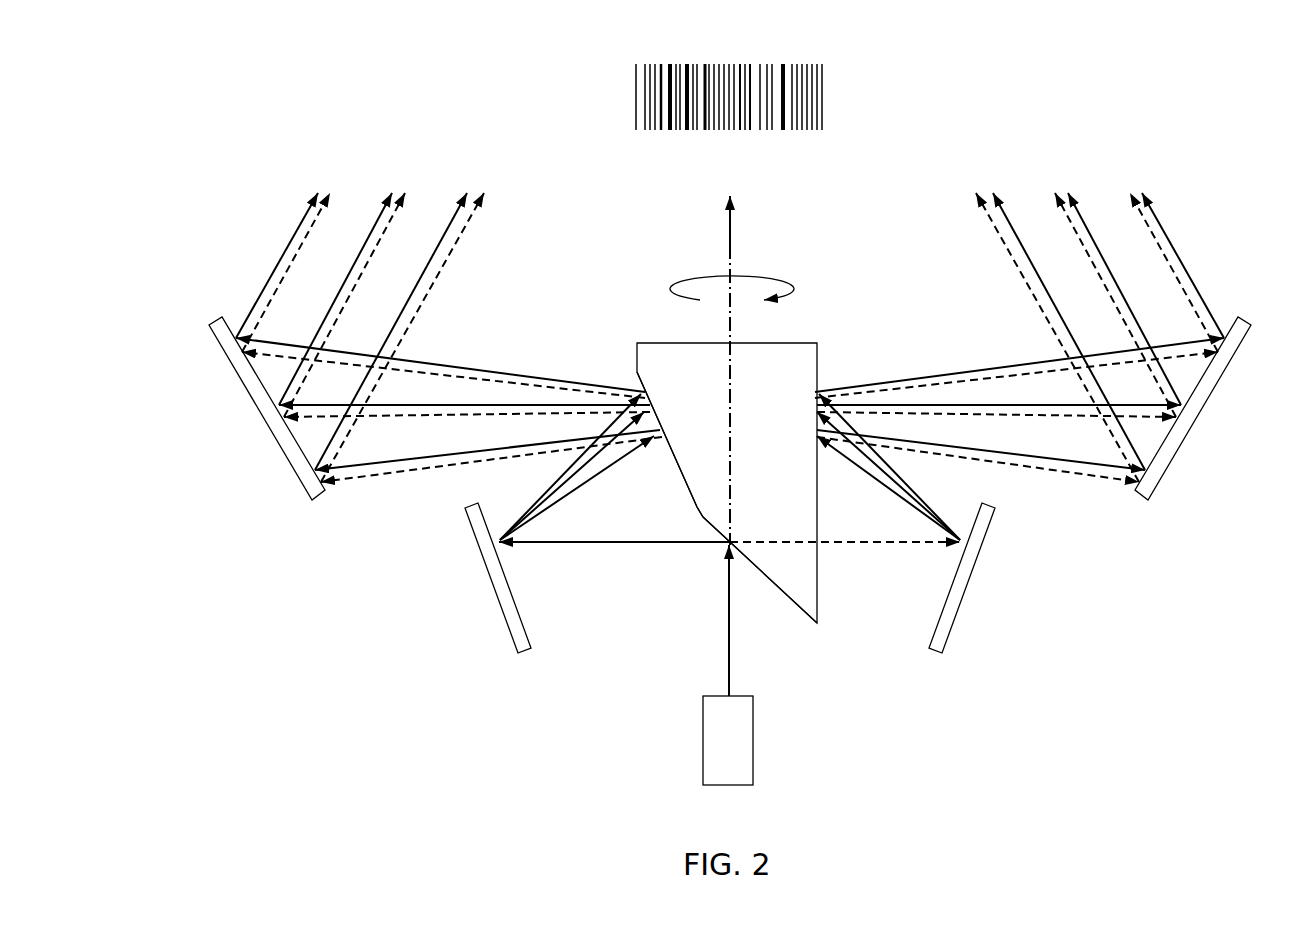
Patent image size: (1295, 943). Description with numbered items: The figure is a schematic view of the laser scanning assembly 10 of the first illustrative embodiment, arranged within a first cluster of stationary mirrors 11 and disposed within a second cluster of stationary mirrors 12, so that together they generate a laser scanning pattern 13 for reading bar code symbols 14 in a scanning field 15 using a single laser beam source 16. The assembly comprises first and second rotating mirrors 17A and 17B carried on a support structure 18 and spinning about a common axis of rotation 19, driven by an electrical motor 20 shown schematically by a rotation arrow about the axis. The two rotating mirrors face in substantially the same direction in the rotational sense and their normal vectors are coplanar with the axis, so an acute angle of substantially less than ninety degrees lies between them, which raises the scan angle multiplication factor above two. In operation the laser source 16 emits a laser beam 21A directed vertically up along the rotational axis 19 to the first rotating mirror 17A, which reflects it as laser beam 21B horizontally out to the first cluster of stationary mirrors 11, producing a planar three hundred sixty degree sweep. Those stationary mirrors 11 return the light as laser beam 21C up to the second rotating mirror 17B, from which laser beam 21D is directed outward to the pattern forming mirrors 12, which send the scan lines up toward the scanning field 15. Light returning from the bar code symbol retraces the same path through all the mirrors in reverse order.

The laser scanning assembly 10 is at (375, 703).
The first cluster of stationary mirrors 11 is at (502, 610).
The second cluster of stationary mirrors 12 is at (288, 463).
The laser scanning pattern 13 is at (729, 110).
The bar code symbols 14 is at (828, 95).
The scanning field 15 is at (570, 62).
The laser beam source 16 is at (752, 740).
The first rotating mirror 17A is at (742, 558).
The second rotating mirror 17B is at (664, 445).
The support structure 18 is at (657, 343).
The axis of rotation 19 is at (733, 242).
The electrical motor 20 is at (732, 280).
The laser beam 21A is at (725, 662).
The laser beam 21B is at (612, 545).
The laser beam 21C is at (583, 457).
The laser beam 21D is at (473, 367).